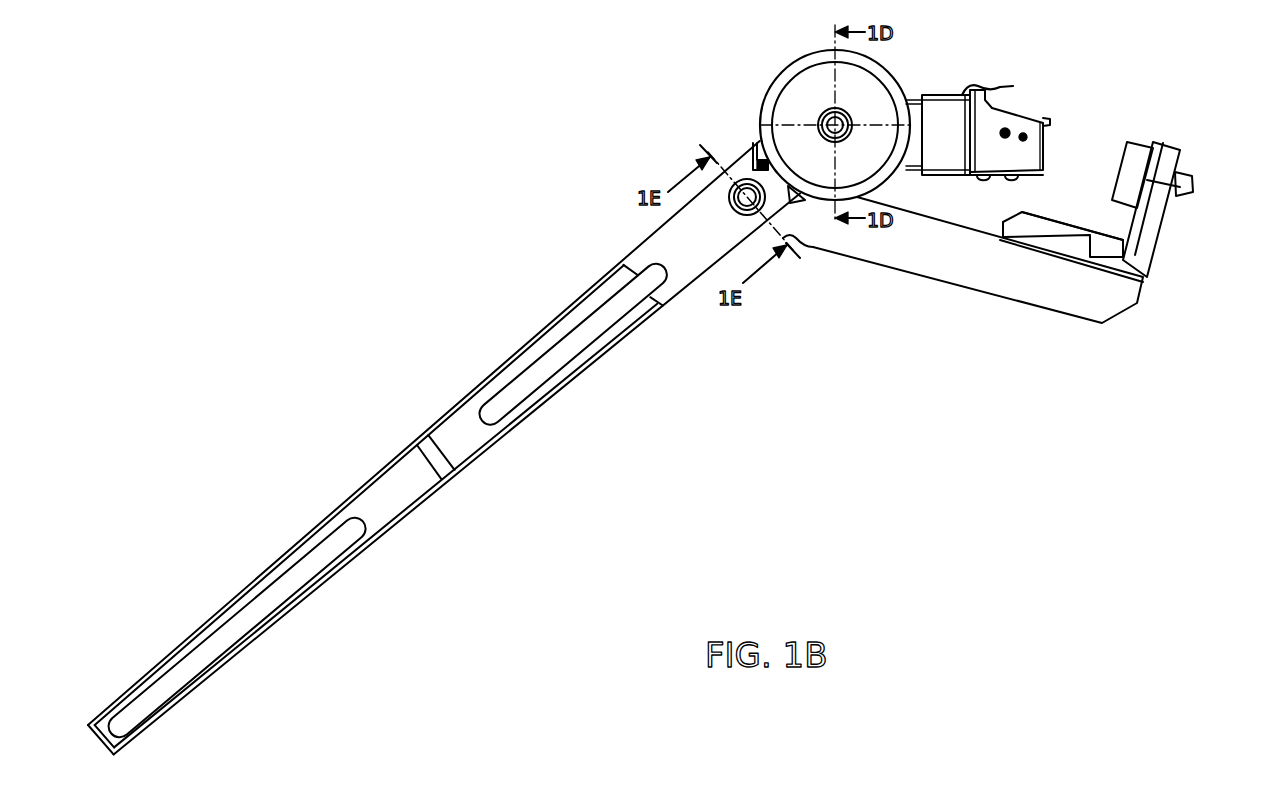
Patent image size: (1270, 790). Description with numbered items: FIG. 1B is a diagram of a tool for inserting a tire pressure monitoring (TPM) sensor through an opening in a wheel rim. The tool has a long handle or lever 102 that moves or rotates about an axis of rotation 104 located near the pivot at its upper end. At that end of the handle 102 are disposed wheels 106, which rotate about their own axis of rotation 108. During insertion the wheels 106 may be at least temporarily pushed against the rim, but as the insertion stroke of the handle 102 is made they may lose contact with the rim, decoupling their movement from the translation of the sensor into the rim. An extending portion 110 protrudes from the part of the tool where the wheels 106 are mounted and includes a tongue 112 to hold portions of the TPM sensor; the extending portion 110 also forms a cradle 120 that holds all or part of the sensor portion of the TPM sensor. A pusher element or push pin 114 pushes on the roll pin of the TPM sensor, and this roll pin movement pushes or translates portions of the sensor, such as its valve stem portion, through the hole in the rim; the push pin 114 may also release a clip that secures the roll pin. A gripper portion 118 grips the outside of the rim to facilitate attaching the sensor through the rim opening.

The handle or lever 102 is at (298, 542).
The axis of rotation 104 is at (745, 180).
The wheels 106 is at (783, 67).
The axis of rotation 108 is at (850, 120).
The extending portion 110 is at (1205, 132).
The tongue 112 is at (976, 84).
The pusher element or push pin 114 is at (1050, 120).
The gripper portion 118 is at (1160, 243).
The cradle 120 is at (1013, 98).